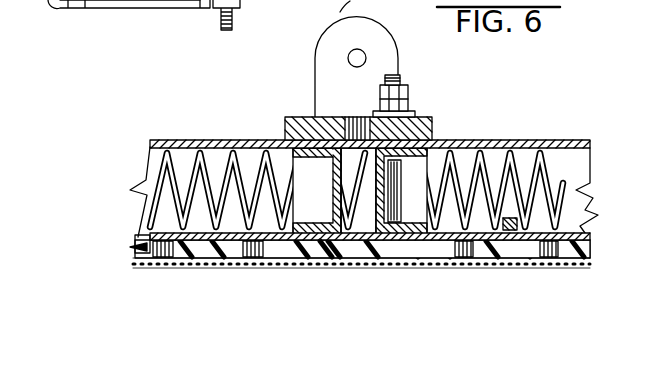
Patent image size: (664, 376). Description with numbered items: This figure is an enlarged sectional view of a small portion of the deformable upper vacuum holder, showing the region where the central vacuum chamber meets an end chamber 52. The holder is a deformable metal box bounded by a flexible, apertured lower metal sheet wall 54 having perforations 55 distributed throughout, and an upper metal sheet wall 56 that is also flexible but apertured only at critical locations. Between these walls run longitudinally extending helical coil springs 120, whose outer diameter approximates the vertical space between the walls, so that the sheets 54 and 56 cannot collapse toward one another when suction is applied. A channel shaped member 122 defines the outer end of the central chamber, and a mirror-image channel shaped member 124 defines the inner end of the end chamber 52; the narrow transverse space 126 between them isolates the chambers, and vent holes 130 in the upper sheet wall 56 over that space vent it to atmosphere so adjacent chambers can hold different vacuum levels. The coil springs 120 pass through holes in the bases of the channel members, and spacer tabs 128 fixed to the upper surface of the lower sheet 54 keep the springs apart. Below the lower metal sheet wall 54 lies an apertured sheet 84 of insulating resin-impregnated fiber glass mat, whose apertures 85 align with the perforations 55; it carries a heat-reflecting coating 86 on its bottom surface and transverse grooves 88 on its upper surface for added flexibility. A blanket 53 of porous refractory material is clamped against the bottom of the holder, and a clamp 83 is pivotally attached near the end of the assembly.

The end chamber 52 is at (333, 15).
The blanket 53 is at (213, 265).
The lower metal sheet wall 54 is at (138, 240).
The perforations 55 is at (163, 238).
The upper metal sheet wall 56 is at (183, 140).
The clamp 83 is at (156, 8).
The apertured sheet 84 is at (393, 272).
The apertures 85 is at (255, 265).
The heat-reflecting coating 86 is at (323, 265).
The transverse grooves 88 is at (527, 281).
The helical coil springs 120 is at (507, 157).
The channel shaped members 122 is at (298, 150).
The channel shaped members 124 is at (437, 143).
The transverse space 126 is at (375, 236).
The spacer tabs 128 is at (520, 224).
The vent holes 130 is at (361, 118).